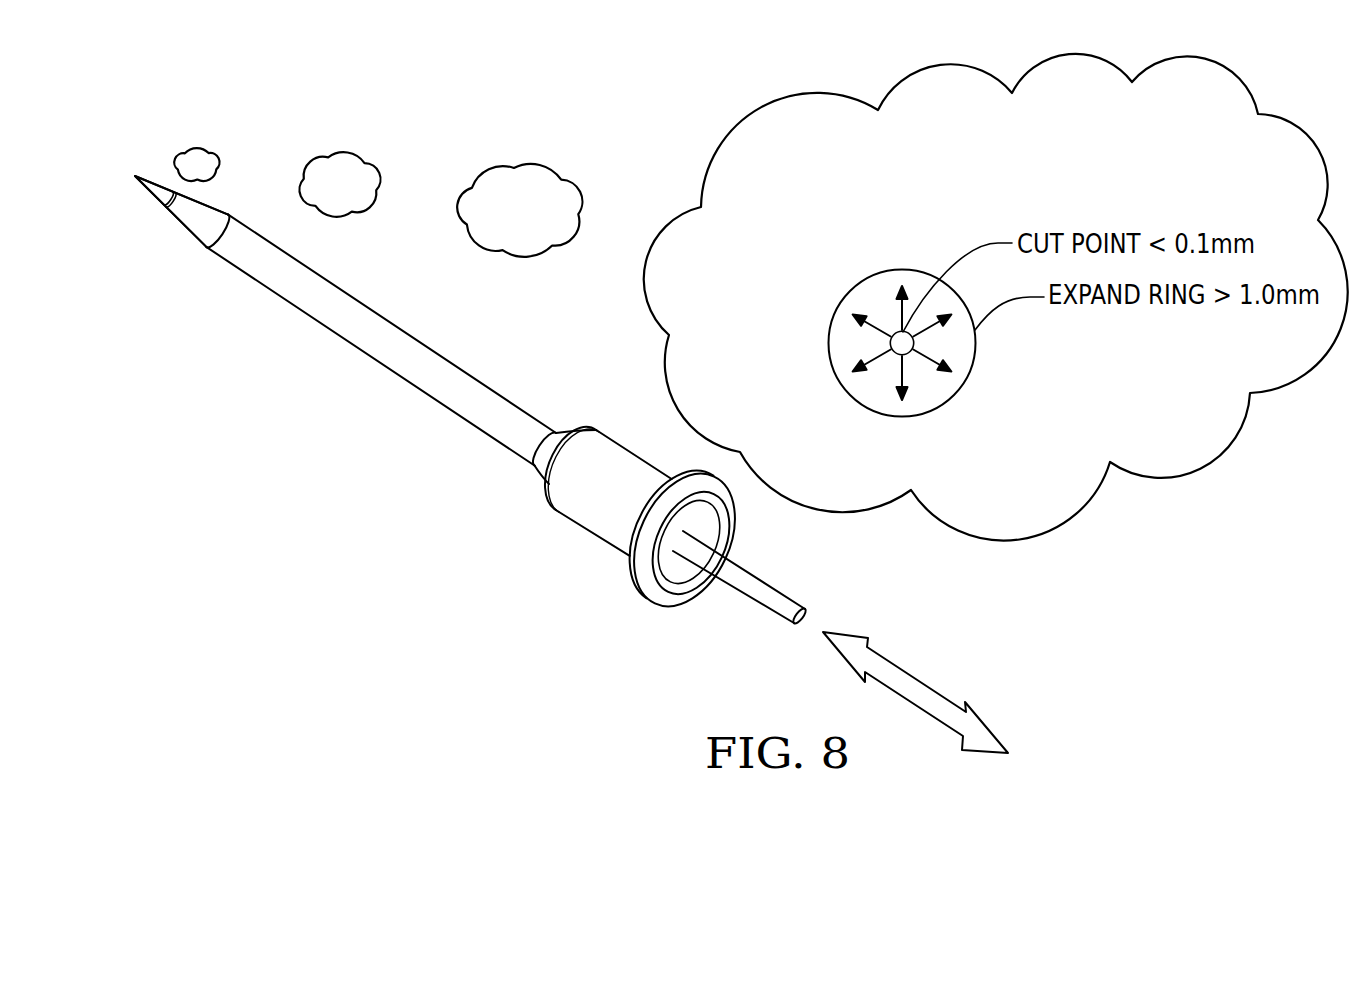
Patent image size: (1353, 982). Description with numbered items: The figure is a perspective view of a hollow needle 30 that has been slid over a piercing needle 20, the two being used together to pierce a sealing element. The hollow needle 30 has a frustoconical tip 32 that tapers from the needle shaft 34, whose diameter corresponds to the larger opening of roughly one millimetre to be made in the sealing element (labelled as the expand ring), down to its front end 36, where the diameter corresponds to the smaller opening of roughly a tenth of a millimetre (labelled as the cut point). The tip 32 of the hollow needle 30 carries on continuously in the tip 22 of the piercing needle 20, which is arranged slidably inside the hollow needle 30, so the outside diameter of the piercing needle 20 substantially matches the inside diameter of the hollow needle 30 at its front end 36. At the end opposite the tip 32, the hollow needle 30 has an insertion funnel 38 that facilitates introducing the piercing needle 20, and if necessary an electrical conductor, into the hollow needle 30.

The piercing needle 20 is at (735, 573).
The tip of the piercing needle 22 is at (157, 198).
The hollow needle 30 is at (305, 302).
The frustoconical tip 32 is at (193, 227).
The needle shaft 34 is at (408, 372).
The front end 36 is at (167, 202).
The insertion funnel 38 is at (580, 512).